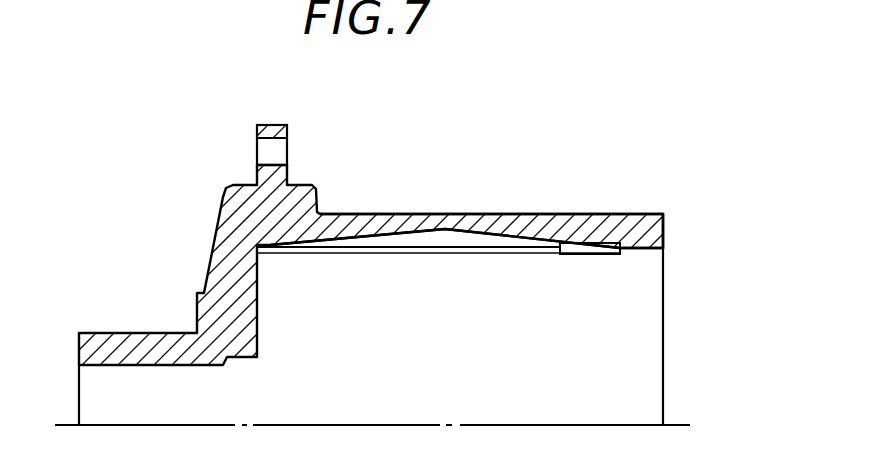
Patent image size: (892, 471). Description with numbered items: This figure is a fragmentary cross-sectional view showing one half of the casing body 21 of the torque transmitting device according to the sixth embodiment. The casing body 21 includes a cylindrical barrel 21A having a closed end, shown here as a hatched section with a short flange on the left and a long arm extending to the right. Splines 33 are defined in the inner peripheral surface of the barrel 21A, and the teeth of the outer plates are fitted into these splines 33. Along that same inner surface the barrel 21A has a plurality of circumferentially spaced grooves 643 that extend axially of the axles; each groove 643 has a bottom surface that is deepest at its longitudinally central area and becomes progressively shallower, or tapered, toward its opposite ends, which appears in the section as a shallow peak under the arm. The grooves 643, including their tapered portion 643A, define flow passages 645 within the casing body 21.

The casing body 21 is at (127, 332).
The cylindrical barrel 21A is at (545, 213).
The splines 33 is at (533, 257).
The grooves 643 is at (563, 253).
The tapered portion of plate spring 643A is at (374, 236).
The flow passages 645 is at (445, 236).